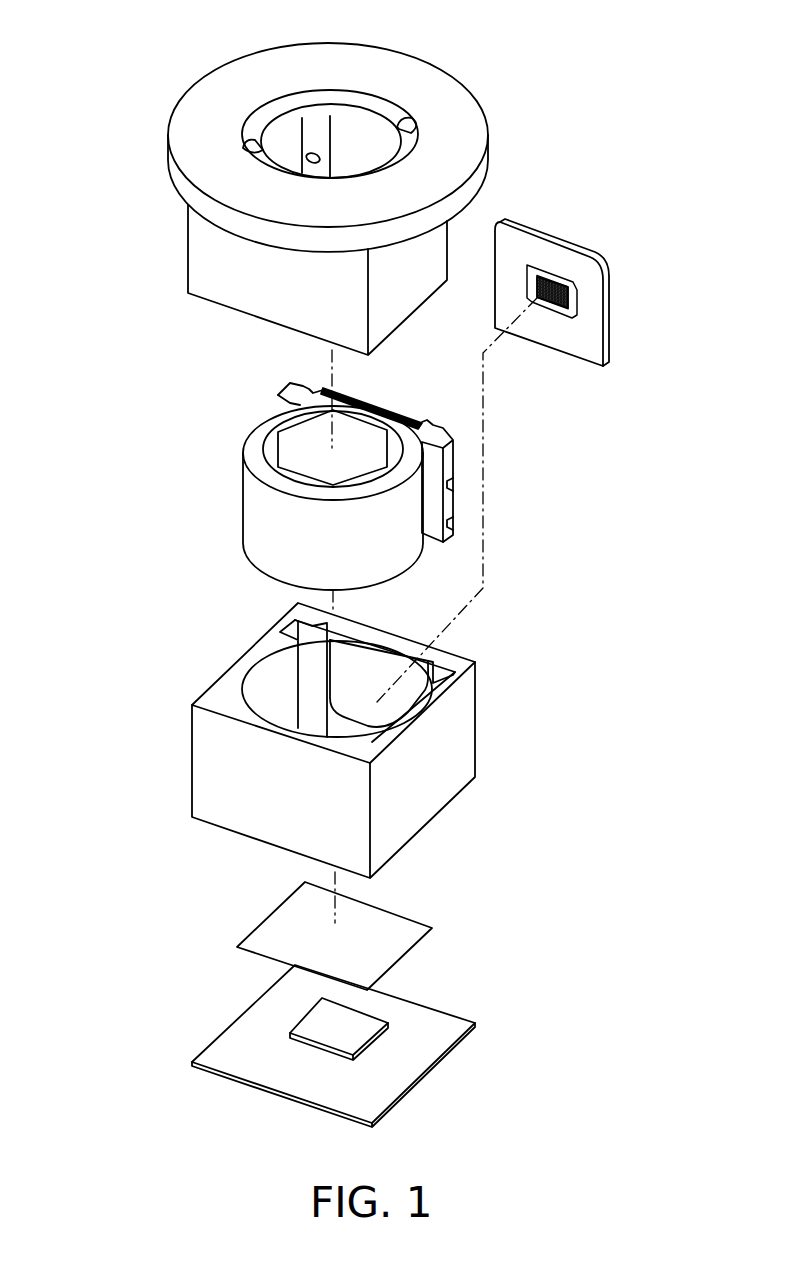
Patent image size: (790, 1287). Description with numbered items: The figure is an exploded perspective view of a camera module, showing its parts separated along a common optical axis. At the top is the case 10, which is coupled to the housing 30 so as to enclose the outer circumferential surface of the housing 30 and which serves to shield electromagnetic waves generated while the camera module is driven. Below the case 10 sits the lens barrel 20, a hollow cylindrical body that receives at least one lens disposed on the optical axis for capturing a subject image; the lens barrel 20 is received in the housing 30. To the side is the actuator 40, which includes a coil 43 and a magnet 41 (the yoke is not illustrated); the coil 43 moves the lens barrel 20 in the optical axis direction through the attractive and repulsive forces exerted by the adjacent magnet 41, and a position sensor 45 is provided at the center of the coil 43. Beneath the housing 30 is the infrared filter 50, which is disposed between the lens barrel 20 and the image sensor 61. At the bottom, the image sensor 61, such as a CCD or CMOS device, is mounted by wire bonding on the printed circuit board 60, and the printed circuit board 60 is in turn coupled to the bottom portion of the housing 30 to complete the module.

The case 10 is at (207, 255).
The lens barrel 20 is at (255, 517).
The housing 30 is at (205, 763).
The actuator 40 is at (477, 380).
The magnet 41 is at (423, 417).
The coil 43 is at (587, 343).
The position sensor 45 is at (575, 288).
The infrared filter 50 is at (282, 917).
The printed circuit board 60 is at (360, 1042).
The image sensor 61 is at (370, 1023).